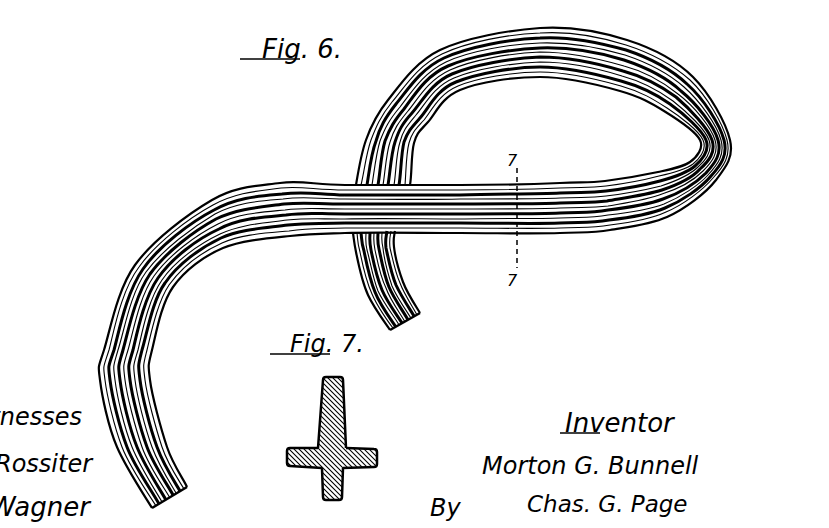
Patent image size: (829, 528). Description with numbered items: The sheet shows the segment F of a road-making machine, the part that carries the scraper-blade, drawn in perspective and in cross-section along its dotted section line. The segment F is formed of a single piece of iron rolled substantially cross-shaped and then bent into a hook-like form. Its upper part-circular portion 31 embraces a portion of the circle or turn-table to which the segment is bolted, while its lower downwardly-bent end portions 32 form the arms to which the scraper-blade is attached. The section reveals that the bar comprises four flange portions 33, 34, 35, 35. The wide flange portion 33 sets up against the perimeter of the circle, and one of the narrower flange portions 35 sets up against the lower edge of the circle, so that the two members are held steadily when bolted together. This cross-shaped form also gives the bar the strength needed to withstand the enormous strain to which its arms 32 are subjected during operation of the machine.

In FIG. 6, the segment F is at (415, 268).
In FIG. 7, the segment F is at (317, 441).
In FIG. 6, the upper part-circular portion 31 is at (538, 131).
In FIG. 6, the downwardly-bent end portions 32 is at (265, 345).
In FIG. 7, the wide flange portion 33 is at (321, 411).
In FIG. 7, the flange portion 34 is at (323, 493).
In FIG. 7, the narrower flange portion 35 is at (289, 460).